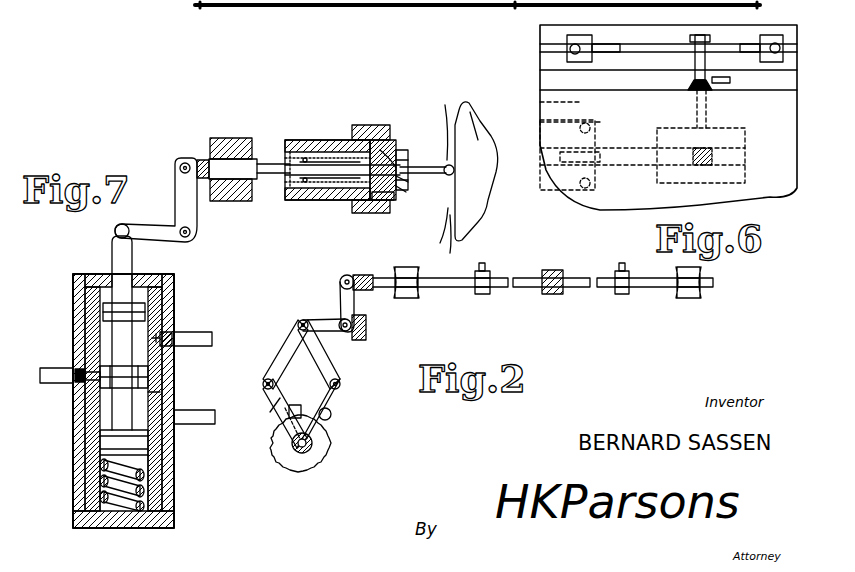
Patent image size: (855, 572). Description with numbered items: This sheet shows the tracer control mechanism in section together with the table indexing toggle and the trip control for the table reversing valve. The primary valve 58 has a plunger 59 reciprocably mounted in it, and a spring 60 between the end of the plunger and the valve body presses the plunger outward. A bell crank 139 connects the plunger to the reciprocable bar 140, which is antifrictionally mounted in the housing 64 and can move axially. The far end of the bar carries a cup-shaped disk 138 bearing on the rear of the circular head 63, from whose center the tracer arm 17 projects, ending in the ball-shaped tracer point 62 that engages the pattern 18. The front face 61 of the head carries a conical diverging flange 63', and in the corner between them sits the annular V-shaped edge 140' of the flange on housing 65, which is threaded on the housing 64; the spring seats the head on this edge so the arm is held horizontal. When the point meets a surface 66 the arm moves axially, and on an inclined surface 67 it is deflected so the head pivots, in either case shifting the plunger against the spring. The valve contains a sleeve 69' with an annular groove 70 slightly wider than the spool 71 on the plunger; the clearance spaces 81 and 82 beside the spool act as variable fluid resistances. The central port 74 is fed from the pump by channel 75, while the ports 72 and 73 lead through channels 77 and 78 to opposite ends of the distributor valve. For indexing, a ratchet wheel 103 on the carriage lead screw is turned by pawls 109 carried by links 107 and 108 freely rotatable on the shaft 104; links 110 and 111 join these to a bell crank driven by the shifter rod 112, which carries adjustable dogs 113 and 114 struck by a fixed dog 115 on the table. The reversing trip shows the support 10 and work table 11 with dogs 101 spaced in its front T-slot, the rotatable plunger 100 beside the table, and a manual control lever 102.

In FIG. 6, the support 10 is at (565, 100).
In FIG. 6, the work support or table 11 is at (548, 24).
In FIG. 7, the tracer arm 17 is at (430, 166).
In FIG. 7, the pattern 18 is at (474, 124).
In FIG. 7, the primary valve 58 is at (176, 470).
In FIG. 7, the plunger 59 is at (122, 274).
In FIG. 7, the spring 60 is at (104, 485).
In FIG. 7, the front face 61 is at (412, 158).
In FIG. 7, the tracer point 62 is at (434, 127).
In FIG. 7, the circular head 63 is at (368, 212).
In FIG. 7, the conical diverging flange 63' is at (419, 198).
In FIG. 7, the housing 64 is at (324, 140).
In FIG. 7, the housing 65 is at (388, 126).
In FIG. 7, the surface 66 is at (429, 228).
In FIG. 7, the inclined surface 67 is at (449, 239).
In FIG. 7, the sleeve 69' is at (164, 300).
In FIG. 7, the annular groove 70 is at (152, 372).
In FIG. 7, the spool 71 is at (92, 392).
In FIG. 7, the port 72 is at (175, 335).
In FIG. 7, the port 73 is at (160, 430).
In FIG. 7, the central port 74 is at (78, 370).
In FIG. 7, the channel 75 is at (56, 375).
In FIG. 7, the channel 77 is at (210, 340).
In FIG. 7, the channel 78 is at (215, 418).
In FIG. 7, the clearance space 81 is at (165, 342).
In FIG. 7, the clearance space 82 is at (150, 396).
In FIG. 6, the plunger 100 is at (708, 122).
In FIG. 6, the dogs 101 is at (582, 38).
In FIG. 6, the manual control lever 102 is at (732, 80).
In FIG. 2, the ratchet wheel 103 is at (320, 452).
In FIG. 2, the shaft 104 is at (315, 470).
In FIG. 2, the link 107 is at (276, 400).
In FIG. 2, the link 108 is at (338, 402).
In FIG. 2, the pawl 109 is at (296, 405).
In FIG. 2, the link 110 is at (282, 356).
In FIG. 2, the link 111 is at (326, 362).
In FIG. 2, the shifter rod 112 is at (368, 290).
In FIG. 2, the adjustable dog 113 is at (480, 295).
In FIG. 2, the adjustable dog 114 is at (622, 295).
In FIG. 2, the fixed dog 115 is at (551, 295).
In FIG. 7, the cup-shaped disk 138 is at (374, 125).
In FIG. 7, the bell crank 139 is at (190, 208).
In FIG. 7, the reciprocable bar 140 is at (243, 157).
In FIG. 7, the annular V-shaped edge 140' is at (420, 185).